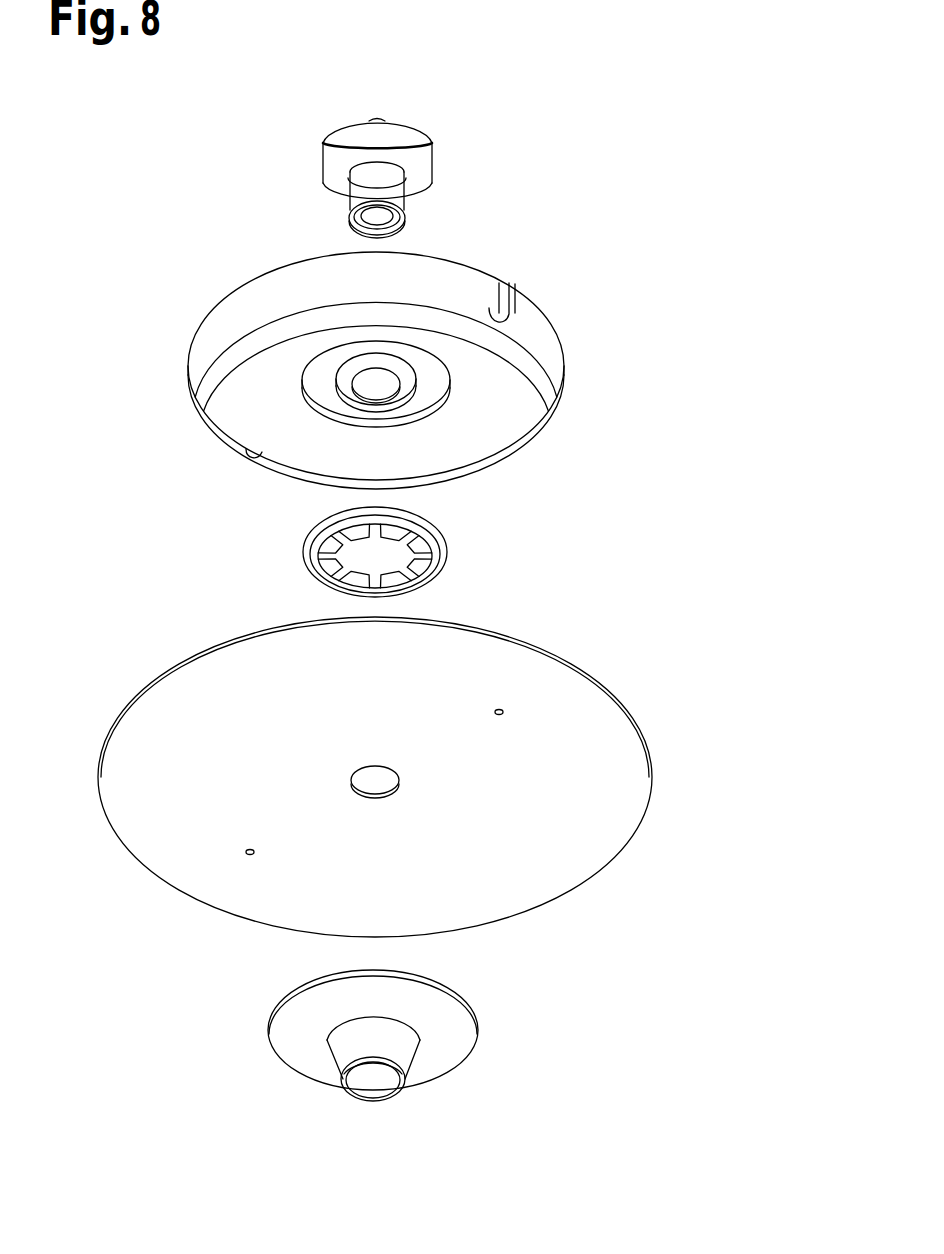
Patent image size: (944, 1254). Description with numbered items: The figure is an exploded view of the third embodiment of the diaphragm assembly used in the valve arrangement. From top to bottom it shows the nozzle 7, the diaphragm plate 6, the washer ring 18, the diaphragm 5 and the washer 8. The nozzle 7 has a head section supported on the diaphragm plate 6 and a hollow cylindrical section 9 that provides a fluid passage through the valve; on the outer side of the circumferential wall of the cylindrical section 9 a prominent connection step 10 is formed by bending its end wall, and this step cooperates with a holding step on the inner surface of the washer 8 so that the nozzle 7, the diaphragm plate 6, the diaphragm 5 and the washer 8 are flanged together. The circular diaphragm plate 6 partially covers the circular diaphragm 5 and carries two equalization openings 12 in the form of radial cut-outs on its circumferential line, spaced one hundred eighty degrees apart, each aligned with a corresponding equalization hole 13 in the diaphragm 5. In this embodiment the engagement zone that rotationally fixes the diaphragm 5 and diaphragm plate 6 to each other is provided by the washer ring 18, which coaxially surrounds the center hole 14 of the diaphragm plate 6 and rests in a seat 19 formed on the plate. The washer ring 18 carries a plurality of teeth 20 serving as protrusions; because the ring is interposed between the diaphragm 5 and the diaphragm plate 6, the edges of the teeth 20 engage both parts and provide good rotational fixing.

The diaphragm 5 is at (522, 878).
The diaphragm plate 6 is at (498, 370).
The nozzle 7 is at (400, 142).
The washer 8 is at (437, 1055).
The cylindrical section 9 is at (366, 187).
The connection step 10 is at (403, 223).
The equalization openings 12 is at (505, 288).
The equalization holes 13 is at (501, 711).
The center hole 14 is at (372, 382).
The washer ring 18 is at (440, 548).
The seat 19 is at (427, 390).
The teeth 20 is at (328, 548).